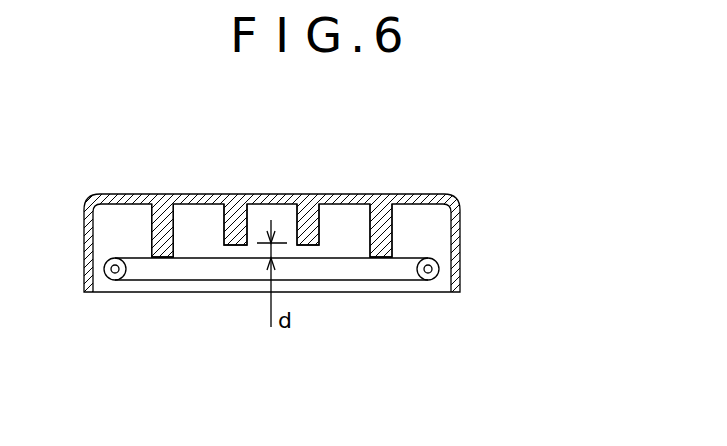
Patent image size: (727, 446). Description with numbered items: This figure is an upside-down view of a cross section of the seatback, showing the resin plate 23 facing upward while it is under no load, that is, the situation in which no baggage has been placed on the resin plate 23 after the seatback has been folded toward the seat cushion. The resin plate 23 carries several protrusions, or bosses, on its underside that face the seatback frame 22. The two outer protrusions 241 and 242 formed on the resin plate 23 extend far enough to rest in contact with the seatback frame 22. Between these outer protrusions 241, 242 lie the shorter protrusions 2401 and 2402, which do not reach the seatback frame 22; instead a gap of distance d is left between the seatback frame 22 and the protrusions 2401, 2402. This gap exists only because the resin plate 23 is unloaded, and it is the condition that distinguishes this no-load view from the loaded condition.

The resin plate 23 is at (460, 237).
The seatback frame 22 is at (197, 280).
The protrusion (boss) 241 is at (395, 222).
The protrusion (boss) 242 is at (178, 222).
The protrusion (boss) 2401 is at (322, 221).
The protrusion (boss) 2402 is at (251, 219).